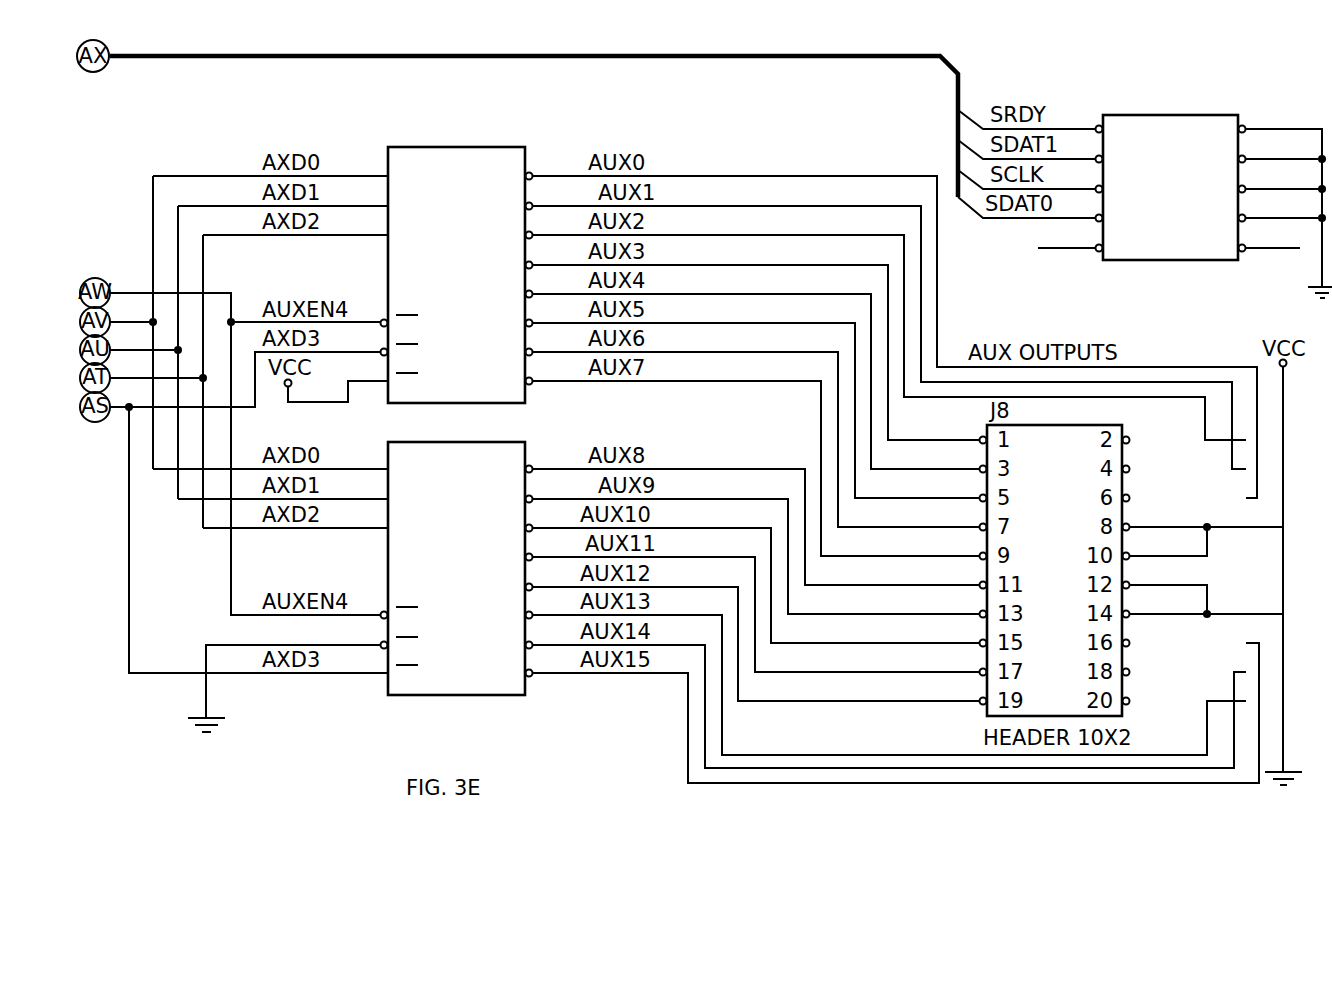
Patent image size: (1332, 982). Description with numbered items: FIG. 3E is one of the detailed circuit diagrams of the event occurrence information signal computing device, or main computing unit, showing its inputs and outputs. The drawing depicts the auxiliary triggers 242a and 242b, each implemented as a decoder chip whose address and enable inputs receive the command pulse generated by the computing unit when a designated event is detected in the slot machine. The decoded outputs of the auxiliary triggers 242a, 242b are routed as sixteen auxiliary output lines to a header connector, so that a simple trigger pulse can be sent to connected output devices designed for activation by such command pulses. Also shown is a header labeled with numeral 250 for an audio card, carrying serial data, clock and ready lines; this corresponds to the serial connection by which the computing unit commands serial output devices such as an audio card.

The auxiliary trigger 242a is at (495, 397).
The auxiliary trigger 242b is at (495, 688).
The audio card header J6 250 is at (1187, 124).